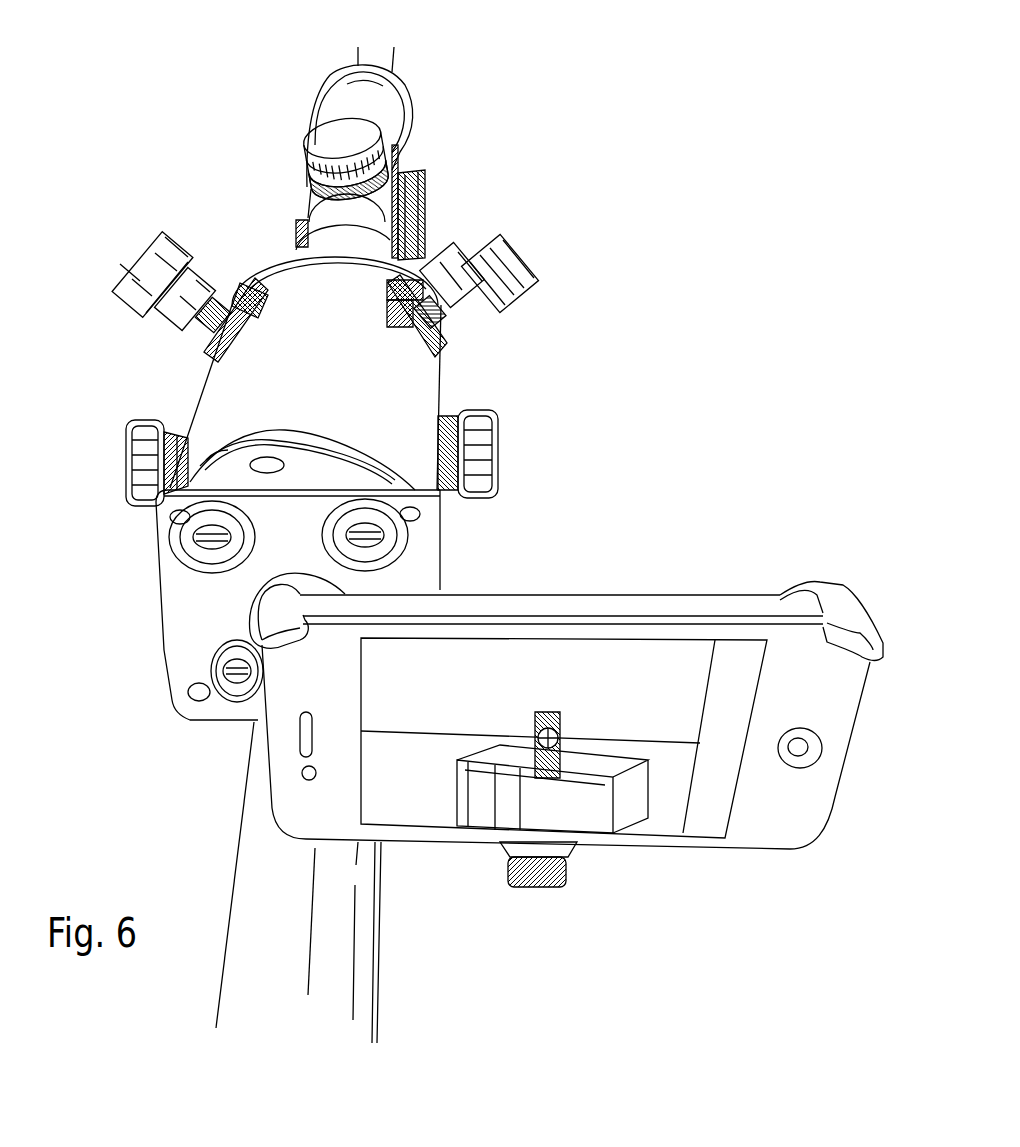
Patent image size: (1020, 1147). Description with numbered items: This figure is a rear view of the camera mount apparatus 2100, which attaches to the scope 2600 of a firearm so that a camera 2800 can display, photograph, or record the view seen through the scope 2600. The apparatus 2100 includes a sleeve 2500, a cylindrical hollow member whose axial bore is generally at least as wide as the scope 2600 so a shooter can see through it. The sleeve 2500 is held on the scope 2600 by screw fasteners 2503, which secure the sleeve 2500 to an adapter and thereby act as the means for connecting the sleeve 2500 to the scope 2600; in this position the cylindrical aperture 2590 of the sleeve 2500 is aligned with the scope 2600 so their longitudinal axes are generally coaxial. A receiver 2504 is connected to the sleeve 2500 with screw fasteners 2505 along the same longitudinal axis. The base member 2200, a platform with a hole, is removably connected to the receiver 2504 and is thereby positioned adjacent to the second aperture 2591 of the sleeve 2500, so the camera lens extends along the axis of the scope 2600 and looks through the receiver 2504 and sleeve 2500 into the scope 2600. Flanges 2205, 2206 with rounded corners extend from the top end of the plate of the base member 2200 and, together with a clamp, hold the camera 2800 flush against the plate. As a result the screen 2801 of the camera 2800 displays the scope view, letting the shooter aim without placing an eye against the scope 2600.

The scope 2600 is at (432, 118).
The sleeve 2500 is at (430, 393).
The cylindrical aperture 2590 is at (248, 256).
The screw fasteners 2503 is at (123, 246).
The second aperture 2591 is at (214, 440).
The screw fasteners 2505 is at (127, 454).
The receiver 2504 is at (427, 560).
The camera mount apparatus 2100 is at (530, 498).
The base member 2200 is at (697, 562).
The camera 2800 is at (607, 600).
The flange 2205 is at (268, 608).
The flange 2206 is at (845, 585).
The screen 2801 is at (665, 790).